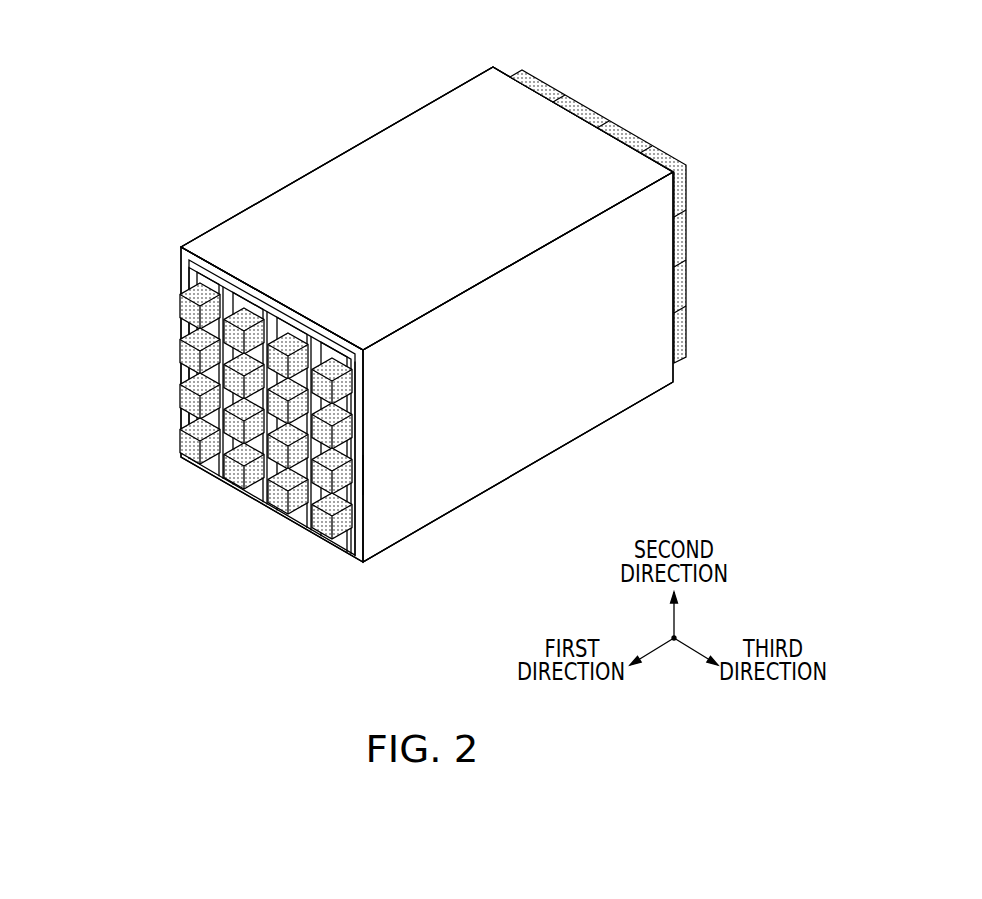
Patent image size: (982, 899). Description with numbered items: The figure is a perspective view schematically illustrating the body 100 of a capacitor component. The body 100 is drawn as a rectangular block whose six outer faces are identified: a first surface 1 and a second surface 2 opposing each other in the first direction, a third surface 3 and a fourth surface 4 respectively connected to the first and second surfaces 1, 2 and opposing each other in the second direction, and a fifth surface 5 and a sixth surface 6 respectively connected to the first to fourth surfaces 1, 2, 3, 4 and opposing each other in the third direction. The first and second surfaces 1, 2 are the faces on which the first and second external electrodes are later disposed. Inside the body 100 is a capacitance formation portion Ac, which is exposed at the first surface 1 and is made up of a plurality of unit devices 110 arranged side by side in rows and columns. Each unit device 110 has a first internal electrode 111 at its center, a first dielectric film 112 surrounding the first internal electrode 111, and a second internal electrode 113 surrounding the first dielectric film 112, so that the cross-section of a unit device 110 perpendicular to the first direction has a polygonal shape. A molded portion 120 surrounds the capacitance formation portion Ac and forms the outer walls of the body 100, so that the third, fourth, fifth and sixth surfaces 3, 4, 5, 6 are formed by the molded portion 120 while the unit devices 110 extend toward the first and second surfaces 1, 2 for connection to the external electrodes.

The body 100 is at (191, 37).
The first surface 1 is at (342, 548).
The second surface 2 is at (678, 370).
The third surface 3 is at (451, 123).
The fourth surface 4 is at (481, 490).
The fifth surface 5 is at (295, 183).
The sixth surface 6 is at (602, 392).
The molded portion 120 is at (380, 148).
The unit device 110 is at (199, 395).
The first internal electrode 111 is at (185, 307).
The first dielectric film 112 is at (189, 283).
The second internal electrode 113 is at (187, 270).
The capacitance formation portion Ac is at (358, 473).